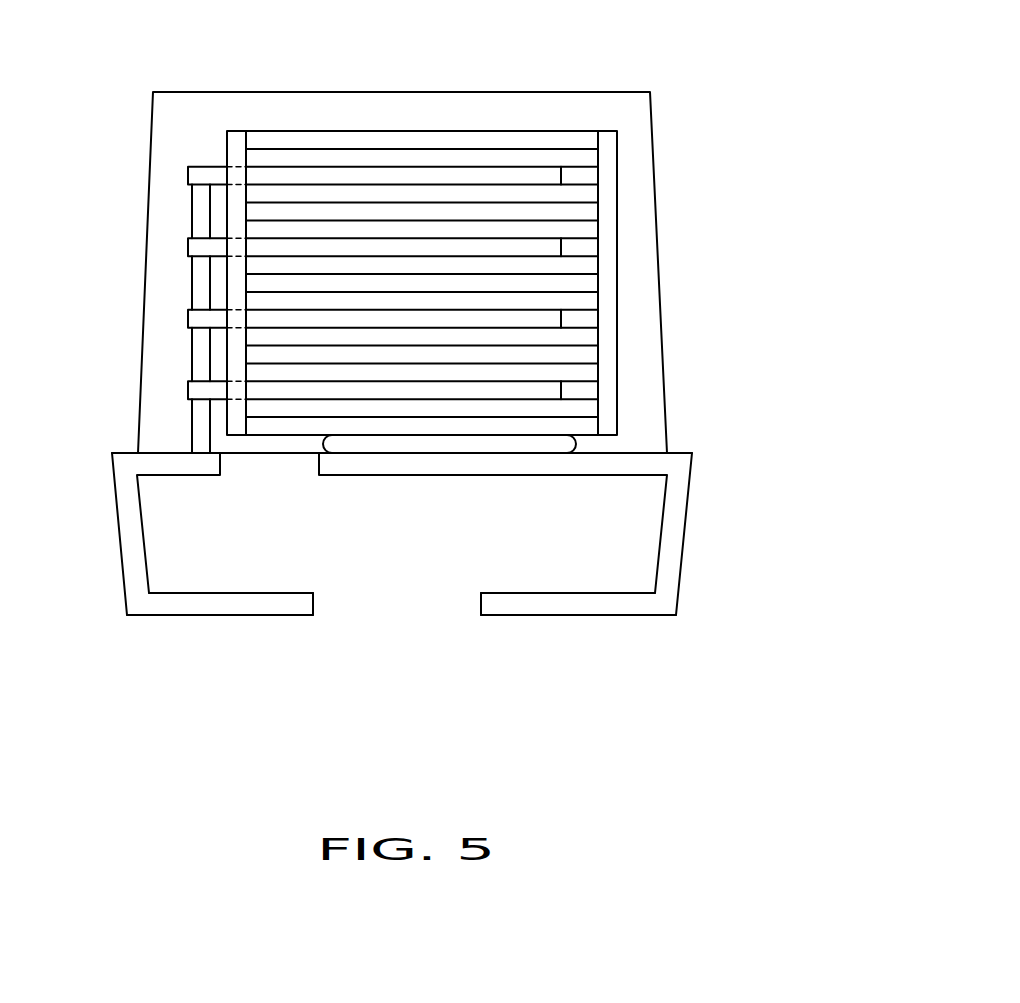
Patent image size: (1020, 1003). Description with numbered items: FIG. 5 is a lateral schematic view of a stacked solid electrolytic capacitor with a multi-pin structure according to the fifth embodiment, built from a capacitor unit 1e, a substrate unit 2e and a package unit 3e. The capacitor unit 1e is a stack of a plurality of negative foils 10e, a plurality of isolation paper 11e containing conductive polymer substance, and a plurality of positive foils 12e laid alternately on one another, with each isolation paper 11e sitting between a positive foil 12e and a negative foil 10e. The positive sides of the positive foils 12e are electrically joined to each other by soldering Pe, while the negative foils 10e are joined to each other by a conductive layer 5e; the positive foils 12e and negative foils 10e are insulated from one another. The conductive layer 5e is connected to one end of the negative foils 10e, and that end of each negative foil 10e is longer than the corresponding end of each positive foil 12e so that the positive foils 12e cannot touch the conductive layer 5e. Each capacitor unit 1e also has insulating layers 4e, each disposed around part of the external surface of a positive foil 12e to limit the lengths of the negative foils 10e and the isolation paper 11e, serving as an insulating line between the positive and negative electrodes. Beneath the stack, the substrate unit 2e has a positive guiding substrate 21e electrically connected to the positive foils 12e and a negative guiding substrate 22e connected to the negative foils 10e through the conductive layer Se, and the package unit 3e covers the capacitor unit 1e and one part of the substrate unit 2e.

The capacitor unit 1e is at (562, 118).
The substrate unit 2e is at (401, 665).
The positive guiding substrate 21e is at (283, 611).
The negative guiding substrate 22e is at (554, 638).
The package unit 3e is at (140, 120).
The insulating layer 4e is at (236, 118).
The conductive layer 5e is at (632, 397).
The negative foil 10e is at (585, 138).
The isolation paper 11e is at (585, 158).
The positive foil 12e is at (548, 177).
The soldering Pe is at (180, 208).
The conductive layer Se is at (553, 441).